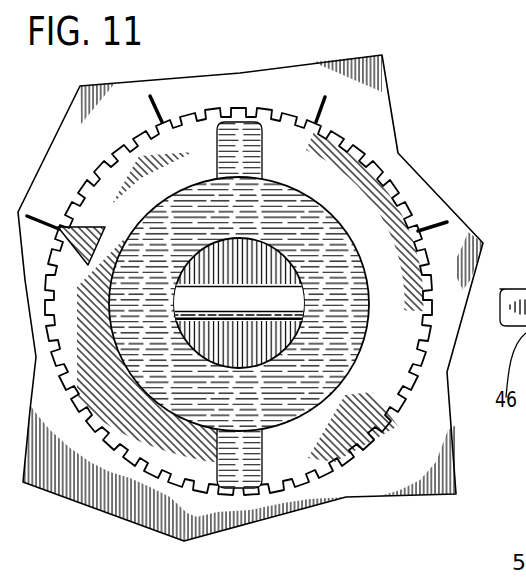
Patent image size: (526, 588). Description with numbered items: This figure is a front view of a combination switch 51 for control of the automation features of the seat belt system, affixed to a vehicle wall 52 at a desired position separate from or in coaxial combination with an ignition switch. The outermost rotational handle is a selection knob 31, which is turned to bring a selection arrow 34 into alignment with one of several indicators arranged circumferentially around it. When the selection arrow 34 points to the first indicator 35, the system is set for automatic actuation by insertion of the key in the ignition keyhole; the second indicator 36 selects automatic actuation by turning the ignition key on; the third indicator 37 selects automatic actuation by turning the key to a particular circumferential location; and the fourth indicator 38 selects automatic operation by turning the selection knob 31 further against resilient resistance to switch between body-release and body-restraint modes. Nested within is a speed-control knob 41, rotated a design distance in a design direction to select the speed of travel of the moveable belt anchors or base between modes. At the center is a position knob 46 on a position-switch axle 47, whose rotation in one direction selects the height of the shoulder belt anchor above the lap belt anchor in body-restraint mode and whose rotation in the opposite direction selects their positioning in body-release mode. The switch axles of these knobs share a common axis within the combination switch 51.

The selection knob 31 is at (374, 163).
The selection arrow 34 is at (93, 227).
The first indicator 35 is at (30, 214).
The second indicator 36 is at (154, 108).
The third indicator 37 is at (325, 97).
The fourth indicator 38 is at (447, 221).
The speed-control knob 41 is at (261, 176).
The position knob 46 is at (248, 325).
The position-switch axle 47 is at (525, 240).
The combination switch 51 is at (384, 475).
The vehicle wall 52 is at (225, 520).